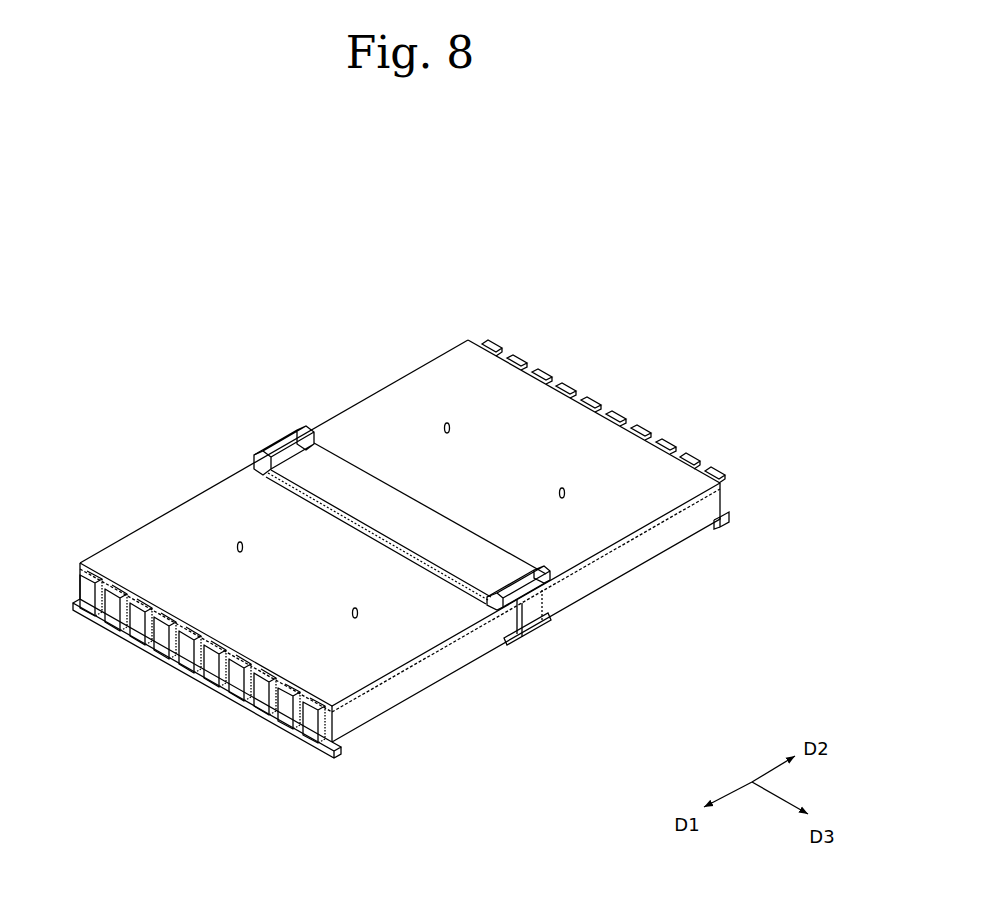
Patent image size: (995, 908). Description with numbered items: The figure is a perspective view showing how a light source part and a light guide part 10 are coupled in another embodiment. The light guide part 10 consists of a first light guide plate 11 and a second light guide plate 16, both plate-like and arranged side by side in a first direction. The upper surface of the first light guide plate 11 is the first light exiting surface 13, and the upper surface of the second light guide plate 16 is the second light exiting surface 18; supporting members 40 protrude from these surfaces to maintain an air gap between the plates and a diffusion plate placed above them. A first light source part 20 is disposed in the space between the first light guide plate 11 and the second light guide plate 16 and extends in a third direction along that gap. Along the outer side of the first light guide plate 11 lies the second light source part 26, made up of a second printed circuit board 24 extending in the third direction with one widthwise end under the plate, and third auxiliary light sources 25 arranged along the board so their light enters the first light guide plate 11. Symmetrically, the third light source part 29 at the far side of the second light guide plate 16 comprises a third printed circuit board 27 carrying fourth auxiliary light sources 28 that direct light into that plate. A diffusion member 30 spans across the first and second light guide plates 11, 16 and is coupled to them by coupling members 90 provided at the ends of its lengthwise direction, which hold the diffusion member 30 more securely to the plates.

The light guide part 10 is at (665, 729).
The first light guide plate 11 is at (445, 666).
The first light exiting surface 13 is at (150, 546).
The second light guide plate 16 is at (610, 571).
The second light exiting surface 18 is at (440, 373).
The first light source part 20 is at (526, 648).
The second printed circuit board 24 is at (282, 814).
The third auxiliary light sources 25 is at (302, 746).
The second light source part 26 is at (213, 711).
The third printed circuit board 27 is at (725, 511).
The fourth auxiliary light sources 28 is at (719, 480).
The third light source part 29 is at (660, 434).
The diffusion member 30 is at (307, 462).
The supporting members 40 is at (238, 538).
The coupling members 90 is at (272, 449).